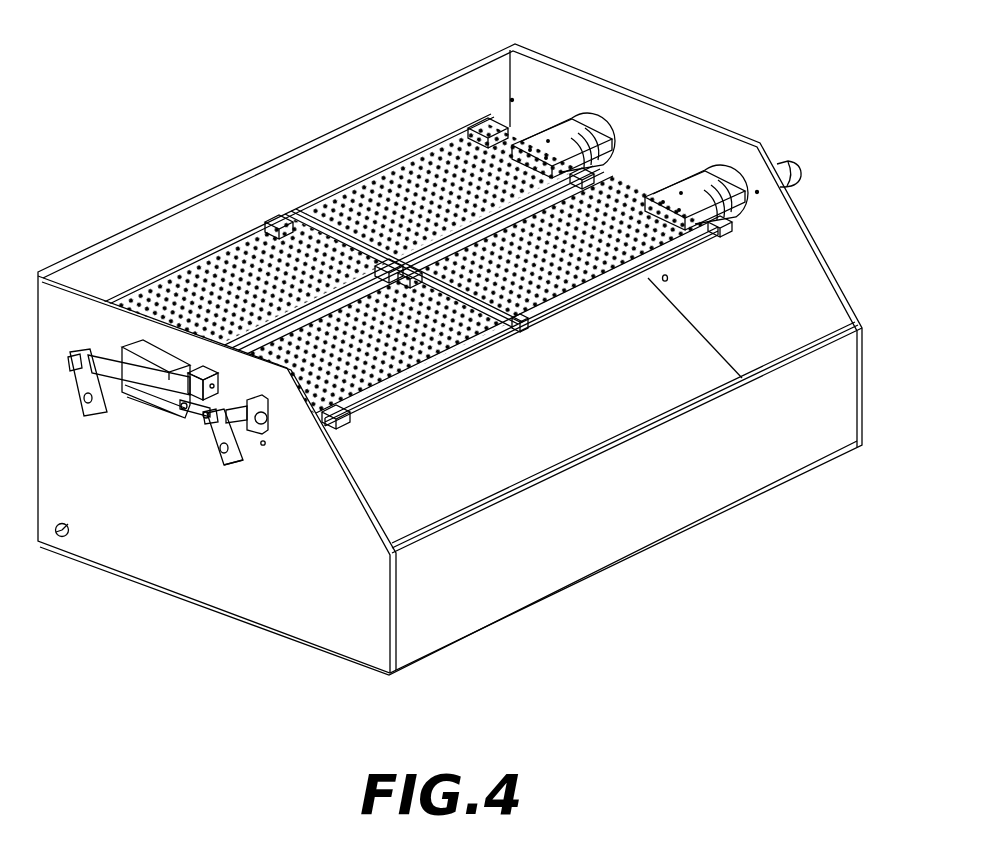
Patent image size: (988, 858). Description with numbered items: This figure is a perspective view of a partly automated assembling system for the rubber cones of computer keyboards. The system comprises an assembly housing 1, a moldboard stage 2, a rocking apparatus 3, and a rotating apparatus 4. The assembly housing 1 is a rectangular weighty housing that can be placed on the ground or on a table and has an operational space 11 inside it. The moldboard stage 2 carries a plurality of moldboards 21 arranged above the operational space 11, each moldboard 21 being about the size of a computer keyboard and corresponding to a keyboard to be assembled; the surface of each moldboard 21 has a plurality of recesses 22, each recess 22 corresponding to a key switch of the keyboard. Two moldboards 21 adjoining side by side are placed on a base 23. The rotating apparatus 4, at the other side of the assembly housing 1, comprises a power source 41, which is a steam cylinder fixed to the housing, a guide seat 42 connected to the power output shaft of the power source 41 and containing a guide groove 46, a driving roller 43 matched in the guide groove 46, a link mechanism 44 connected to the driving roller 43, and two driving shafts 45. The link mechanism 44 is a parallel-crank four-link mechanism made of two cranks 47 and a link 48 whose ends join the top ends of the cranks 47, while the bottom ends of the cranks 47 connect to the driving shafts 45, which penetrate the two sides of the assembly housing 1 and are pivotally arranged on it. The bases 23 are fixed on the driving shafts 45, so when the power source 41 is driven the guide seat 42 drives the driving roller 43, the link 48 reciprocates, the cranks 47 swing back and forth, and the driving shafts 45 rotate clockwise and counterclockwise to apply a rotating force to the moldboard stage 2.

The assembly housing 1 is at (328, 150).
The moldboard stage 2 is at (490, 224).
The rocking apparatus 3 is at (801, 133).
The rotating apparatus 4 is at (186, 352).
The operational space 11 is at (668, 387).
The moldboard 21 is at (510, 143).
The recess 22 is at (240, 257).
The base 23 is at (691, 260).
The power source 41 is at (145, 352).
The guide seat 42 is at (208, 374).
The driving roller 43 is at (212, 396).
The link mechanism 44 is at (208, 418).
The driving shaft 45 is at (231, 463).
The guide groove 46 is at (188, 368).
The crank 47 is at (245, 453).
The link 48 is at (106, 355).